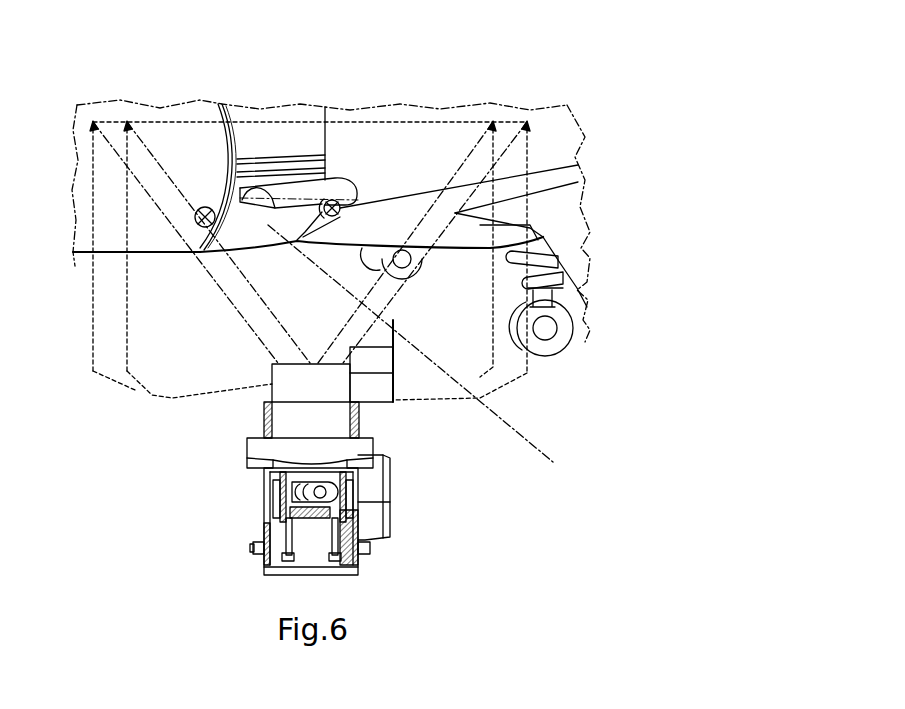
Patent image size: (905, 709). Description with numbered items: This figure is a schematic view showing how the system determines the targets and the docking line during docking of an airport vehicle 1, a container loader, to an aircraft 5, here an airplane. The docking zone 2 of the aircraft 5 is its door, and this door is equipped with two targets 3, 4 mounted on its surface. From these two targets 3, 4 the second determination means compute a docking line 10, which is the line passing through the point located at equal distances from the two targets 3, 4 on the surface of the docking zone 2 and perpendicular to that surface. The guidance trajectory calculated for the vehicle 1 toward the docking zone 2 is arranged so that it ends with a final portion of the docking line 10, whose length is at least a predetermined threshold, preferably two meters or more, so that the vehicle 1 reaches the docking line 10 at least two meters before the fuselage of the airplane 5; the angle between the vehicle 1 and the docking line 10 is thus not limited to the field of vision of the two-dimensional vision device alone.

The airport vehicle 1 is at (228, 482).
The docking zone 2 is at (354, 158).
The target 3 is at (204, 206).
The target 4 is at (330, 199).
The aircraft 5 is at (608, 116).
The docking line 10 is at (539, 441).